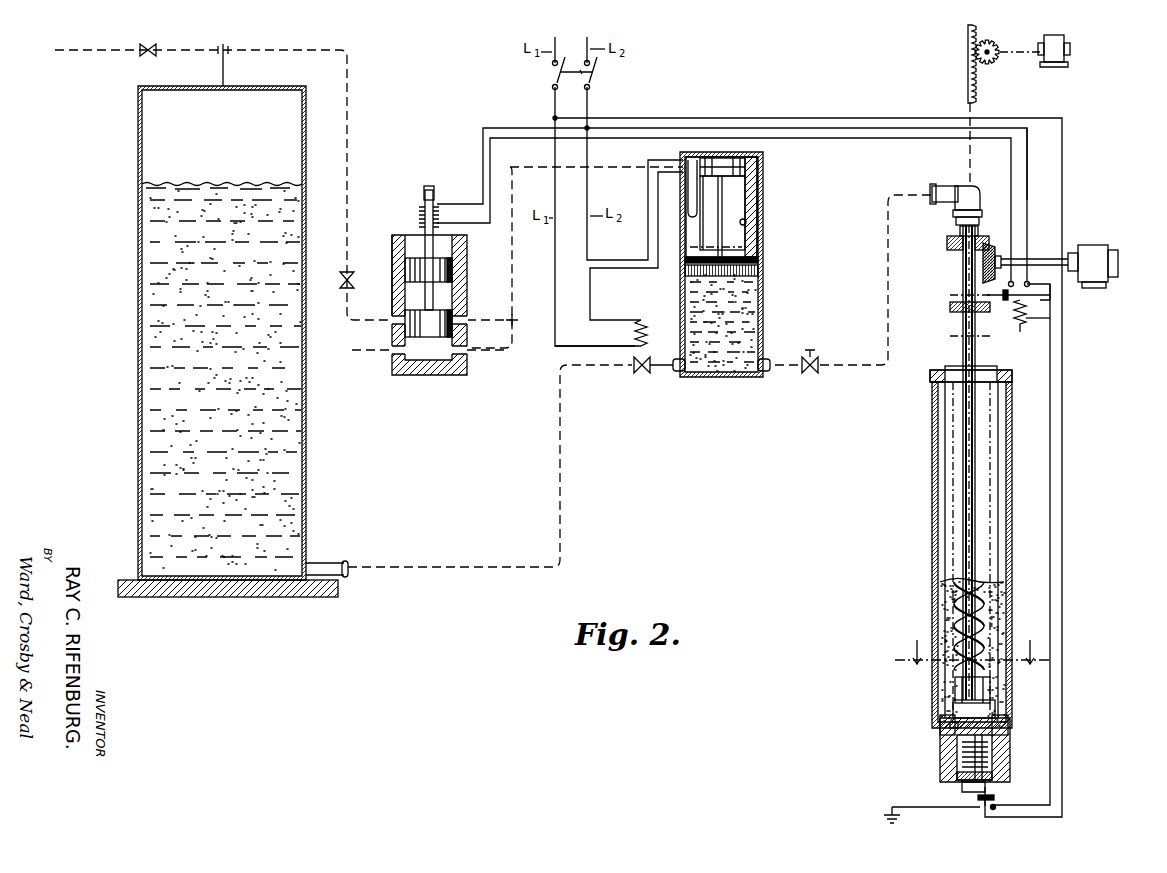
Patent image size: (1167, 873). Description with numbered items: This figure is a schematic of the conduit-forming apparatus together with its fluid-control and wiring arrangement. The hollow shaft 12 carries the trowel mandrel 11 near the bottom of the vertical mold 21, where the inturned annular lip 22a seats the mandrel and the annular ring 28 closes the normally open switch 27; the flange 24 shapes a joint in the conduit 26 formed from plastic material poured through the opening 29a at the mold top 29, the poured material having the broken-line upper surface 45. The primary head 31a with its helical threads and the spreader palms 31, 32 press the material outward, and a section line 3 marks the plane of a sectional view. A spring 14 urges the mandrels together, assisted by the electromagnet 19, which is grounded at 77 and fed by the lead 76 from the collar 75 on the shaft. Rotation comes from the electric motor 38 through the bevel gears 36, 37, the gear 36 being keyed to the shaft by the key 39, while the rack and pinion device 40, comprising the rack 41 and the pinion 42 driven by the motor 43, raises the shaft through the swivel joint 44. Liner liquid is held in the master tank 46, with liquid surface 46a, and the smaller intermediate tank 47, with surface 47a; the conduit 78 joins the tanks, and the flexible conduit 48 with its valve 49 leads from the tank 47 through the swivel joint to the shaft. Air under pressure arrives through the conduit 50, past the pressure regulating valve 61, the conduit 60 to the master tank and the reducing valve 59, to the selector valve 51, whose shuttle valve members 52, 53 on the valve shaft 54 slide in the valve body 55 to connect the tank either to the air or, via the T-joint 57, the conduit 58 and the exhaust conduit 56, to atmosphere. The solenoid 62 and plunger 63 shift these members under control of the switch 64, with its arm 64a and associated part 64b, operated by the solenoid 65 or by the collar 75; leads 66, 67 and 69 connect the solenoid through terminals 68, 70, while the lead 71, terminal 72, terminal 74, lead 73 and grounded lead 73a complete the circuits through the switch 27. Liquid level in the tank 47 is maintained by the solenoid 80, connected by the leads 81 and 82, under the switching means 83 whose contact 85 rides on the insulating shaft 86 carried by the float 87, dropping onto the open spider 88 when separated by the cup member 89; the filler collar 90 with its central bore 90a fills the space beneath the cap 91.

The section line 3- 3 is at (972, 643).
The trowel mandrel 11 is at (1002, 766).
The shaft member 12 is at (963, 279).
The spring 14 is at (953, 726).
The electromagnet 19 is at (960, 751).
The mold 21 is at (933, 413).
The inturned annular lip 22a is at (968, 780).
The flange 24 is at (1000, 721).
The conduit 26 is at (948, 518).
The switch 27 is at (996, 796).
The annular ring 28 is at (962, 788).
The top flange 29 is at (930, 374).
The opening 29a is at (953, 366).
The spreader palm 31 is at (965, 690).
The primary head 31a is at (958, 618).
The spreader palm 32 is at (998, 696).
The bevel gear 36 is at (947, 243).
The bevel gear 37 is at (983, 263).
The electric motor 38 is at (1110, 251).
The key 39 is at (960, 232).
The rack and pinion device 40 is at (1020, 65).
The rack 41 is at (965, 51).
The pinion 42 is at (997, 45).
The torque source 43 is at (1066, 42).
The swivel joint 44 is at (946, 215).
The upper surface 45 is at (955, 580).
The master tank 46 is at (141, 338).
The upper surface 46a is at (220, 183).
The intermediate tank 47 is at (772, 312).
The upper surface 47a is at (690, 272).
The conduit 48 is at (936, 191).
The valve 49 is at (808, 366).
The conduit 50 is at (349, 122).
The selector valve 51 is at (429, 373).
The shuttle valve member 52 is at (455, 266).
The shuttle valve member 53 is at (452, 313).
The valve shaft 54 is at (437, 292).
The valve body 55 is at (390, 250).
The exhaust conduit 56 is at (366, 351).
The T-joint 57 is at (514, 320).
The conduit 58 is at (484, 348).
The reducing valve 59 is at (345, 276).
The conduit 60 is at (223, 57).
The pressure regulating valve 61 is at (140, 56).
The solenoid 62 is at (419, 215).
The plunger 63 is at (429, 186).
The switch 64 is at (1038, 298).
The arm 64a is at (1005, 300).
The spring 64b is at (1012, 296).
The solenoid 65 is at (1034, 319).
The lead 66 is at (516, 128).
The lead 67 is at (500, 138).
The terminal 68 is at (1011, 280).
The lead 69 is at (1028, 191).
The terminal 70 is at (1027, 282).
The lead 71 is at (1050, 528).
The terminal 72 is at (980, 798).
The lead 73 is at (1063, 527).
The grounded lead 73a is at (892, 807).
The terminal 74 is at (640, 368).
The collar 75 is at (944, 311).
The electrical lead 76 is at (968, 442).
The ground 77 is at (985, 748).
The conduit 78 is at (559, 420).
The solenoid 80 is at (644, 332).
The lead 81 is at (620, 346).
The flexible lead 82 is at (648, 185).
The switching means 83 is at (764, 157).
The switch contact 85 is at (758, 184).
The shaft 86 is at (726, 246).
The float 87 is at (750, 283).
The open spider 88 is at (758, 261).
The cup member 89 is at (752, 170).
The filler collar 90 is at (757, 210).
The central bore 90a is at (746, 222).
The cap 91 is at (683, 152).